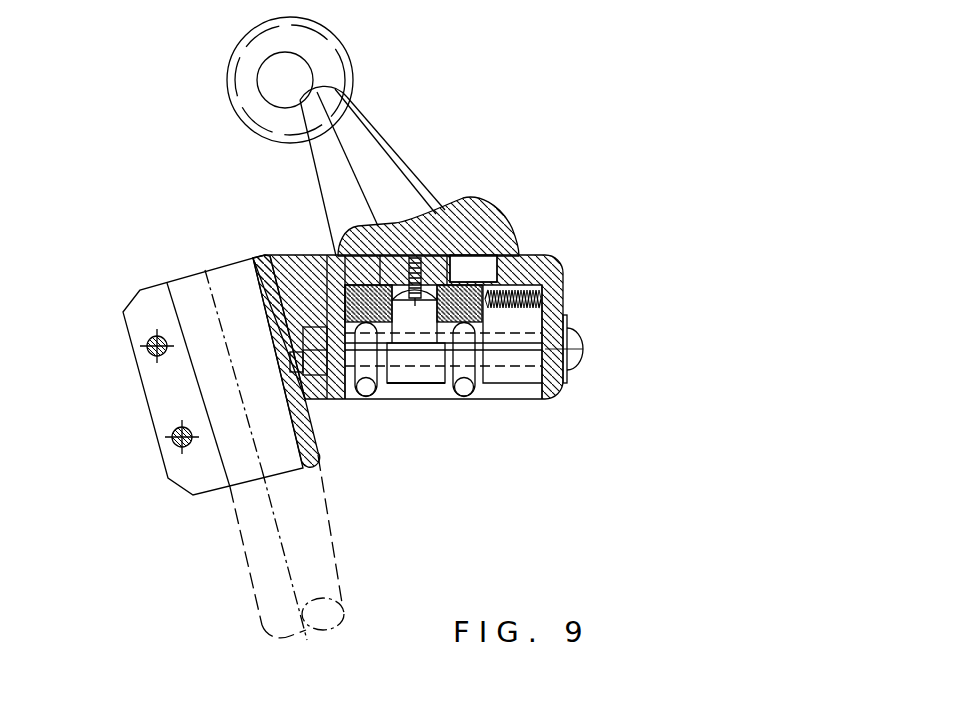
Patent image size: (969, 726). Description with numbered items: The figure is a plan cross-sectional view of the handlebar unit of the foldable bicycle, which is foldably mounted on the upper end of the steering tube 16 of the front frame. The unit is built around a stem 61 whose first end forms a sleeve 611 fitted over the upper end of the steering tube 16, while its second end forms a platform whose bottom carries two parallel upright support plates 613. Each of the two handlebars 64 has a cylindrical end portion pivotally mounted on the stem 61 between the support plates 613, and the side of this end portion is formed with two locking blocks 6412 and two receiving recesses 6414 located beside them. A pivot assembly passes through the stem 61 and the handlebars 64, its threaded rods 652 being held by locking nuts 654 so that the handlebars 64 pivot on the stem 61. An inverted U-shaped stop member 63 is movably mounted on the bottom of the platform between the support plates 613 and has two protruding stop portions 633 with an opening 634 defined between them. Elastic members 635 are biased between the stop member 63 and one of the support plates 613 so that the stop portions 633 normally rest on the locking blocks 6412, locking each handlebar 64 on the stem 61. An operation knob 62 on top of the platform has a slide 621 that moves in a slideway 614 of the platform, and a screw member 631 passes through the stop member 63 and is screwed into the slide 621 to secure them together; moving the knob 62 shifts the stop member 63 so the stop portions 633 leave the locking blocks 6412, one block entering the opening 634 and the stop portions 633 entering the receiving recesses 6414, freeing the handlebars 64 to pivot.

The steering tube 16 is at (250, 547).
The stem 61 is at (212, 261).
The sleeve 611 is at (148, 305).
The locking nuts 654 is at (280, 372).
The stop member 63 is at (336, 293).
The operation knob 62 is at (498, 208).
The slide 621 is at (430, 256).
The handlebars 64 is at (377, 160).
The slideway 614 is at (473, 268).
The stop portions 633 is at (463, 297).
The opening 634 is at (430, 303).
The receiving recesses 6414 is at (413, 373).
The screw member 631 is at (425, 308).
The locking blocks 6412 is at (480, 373).
The elastic members 635 is at (540, 296).
The threaded rods 652 is at (575, 342).
The support plates 613 is at (550, 380).